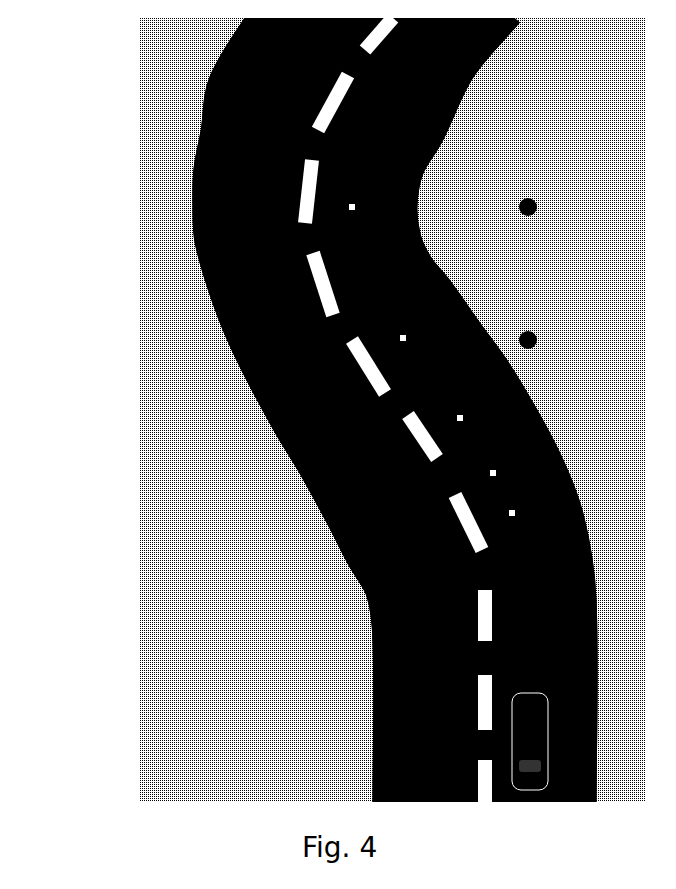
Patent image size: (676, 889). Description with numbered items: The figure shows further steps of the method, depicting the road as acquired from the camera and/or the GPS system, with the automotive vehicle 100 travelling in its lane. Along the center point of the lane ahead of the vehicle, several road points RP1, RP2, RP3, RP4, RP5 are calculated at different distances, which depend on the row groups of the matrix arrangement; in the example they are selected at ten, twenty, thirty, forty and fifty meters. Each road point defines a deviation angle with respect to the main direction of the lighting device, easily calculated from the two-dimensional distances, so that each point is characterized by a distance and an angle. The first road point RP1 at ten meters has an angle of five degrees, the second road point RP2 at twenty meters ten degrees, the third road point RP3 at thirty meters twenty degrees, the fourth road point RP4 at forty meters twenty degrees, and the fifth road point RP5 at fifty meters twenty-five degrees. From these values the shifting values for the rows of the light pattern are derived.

The automotive vehicle 100 is at (523, 748).
The road point 1 RP1 is at (509, 514).
The road point 2 RP2 is at (490, 474).
The road point 3 RP3 is at (457, 419).
The road point 4 RP4 is at (400, 339).
The road point 5 RP5 is at (349, 209).